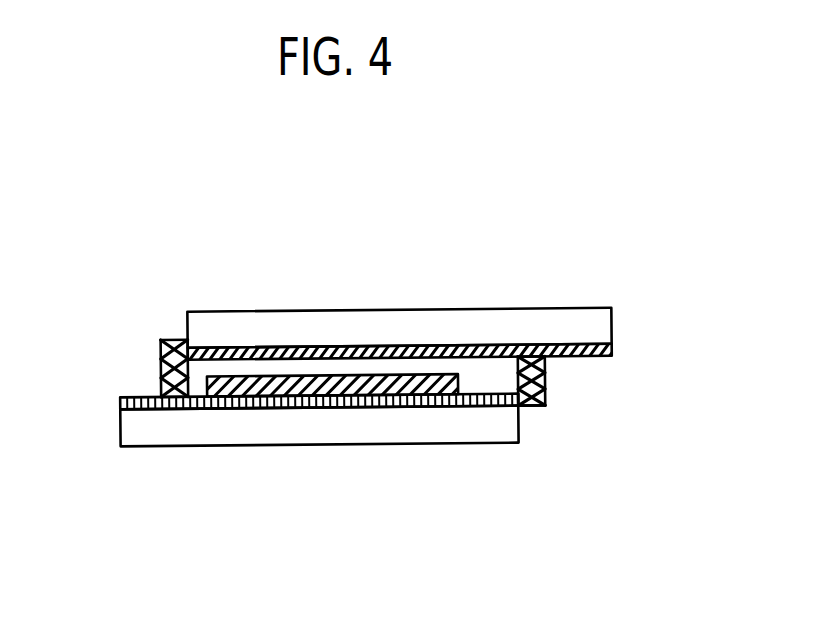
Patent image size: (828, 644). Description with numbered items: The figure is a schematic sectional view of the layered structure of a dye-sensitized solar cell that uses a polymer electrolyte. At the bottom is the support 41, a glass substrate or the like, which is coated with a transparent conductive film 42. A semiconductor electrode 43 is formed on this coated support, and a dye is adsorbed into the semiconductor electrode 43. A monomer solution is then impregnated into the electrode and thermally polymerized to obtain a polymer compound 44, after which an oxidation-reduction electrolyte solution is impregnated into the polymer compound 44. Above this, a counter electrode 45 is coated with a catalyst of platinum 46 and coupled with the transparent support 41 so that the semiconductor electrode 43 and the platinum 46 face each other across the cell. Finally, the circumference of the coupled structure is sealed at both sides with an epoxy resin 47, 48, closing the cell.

The support 41 is at (223, 437).
The transparent conductive film 42 is at (477, 407).
The semiconductor electrode 43 is at (230, 377).
The polymer compound 44 is at (518, 410).
The counter electrode 45 is at (436, 325).
The platinum 46 is at (540, 345).
The epoxy resin 47 is at (545, 382).
The epoxy resin 48 is at (160, 365).